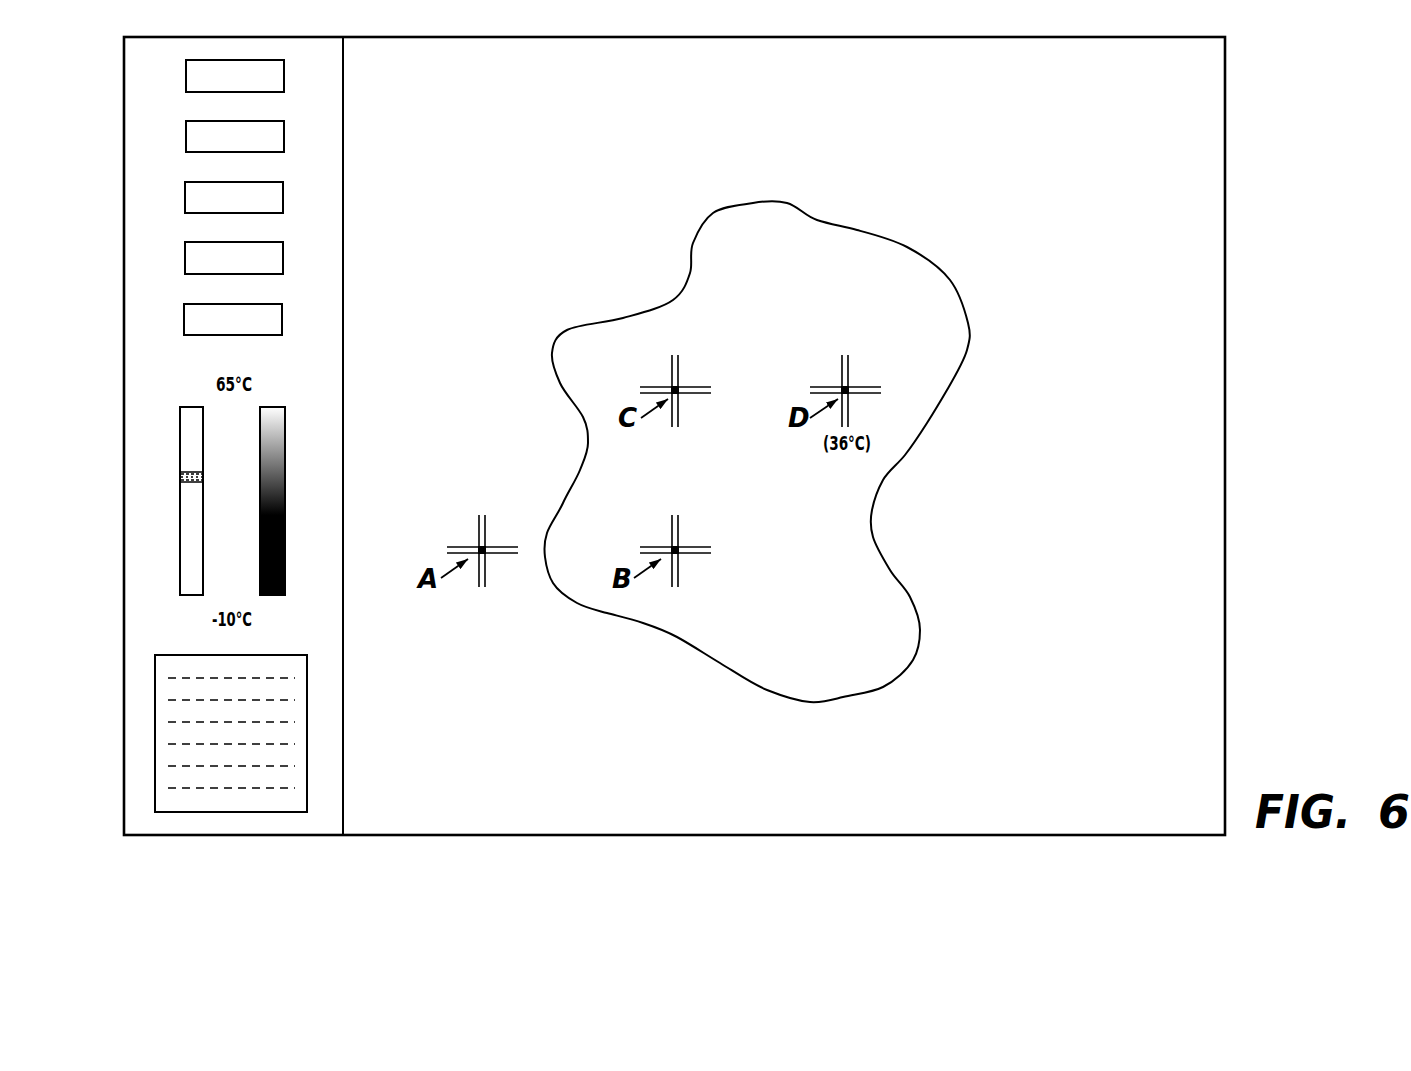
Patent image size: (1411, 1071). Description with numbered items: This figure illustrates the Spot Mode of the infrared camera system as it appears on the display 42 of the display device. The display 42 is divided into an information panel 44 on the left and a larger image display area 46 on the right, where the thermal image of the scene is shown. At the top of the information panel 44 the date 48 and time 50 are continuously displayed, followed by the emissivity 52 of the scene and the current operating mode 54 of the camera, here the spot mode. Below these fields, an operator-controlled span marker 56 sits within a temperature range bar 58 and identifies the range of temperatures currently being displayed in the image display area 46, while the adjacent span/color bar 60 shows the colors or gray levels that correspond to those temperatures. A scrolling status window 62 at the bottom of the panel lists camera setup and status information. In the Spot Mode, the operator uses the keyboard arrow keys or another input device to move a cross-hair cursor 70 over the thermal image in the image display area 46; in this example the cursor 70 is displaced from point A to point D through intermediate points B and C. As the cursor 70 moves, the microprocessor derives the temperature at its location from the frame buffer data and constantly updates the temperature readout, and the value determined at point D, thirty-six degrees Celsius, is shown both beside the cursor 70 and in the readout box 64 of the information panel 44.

The display 42 is at (118, 119).
The information panel 44 is at (343, 389).
The image display area 46 is at (1210, 390).
The date 48 is at (284, 74).
The time 50 is at (284, 136).
The emissivity 52 is at (283, 197).
The operating mode 54 is at (283, 258).
The span marker 56 is at (195, 478).
The temperature range bar 58 is at (200, 444).
The span/color bar 60 is at (277, 444).
The scrolling status window 62 is at (294, 667).
The spot temperature field 64 is at (282, 319).
The cursor 70 is at (485, 531).